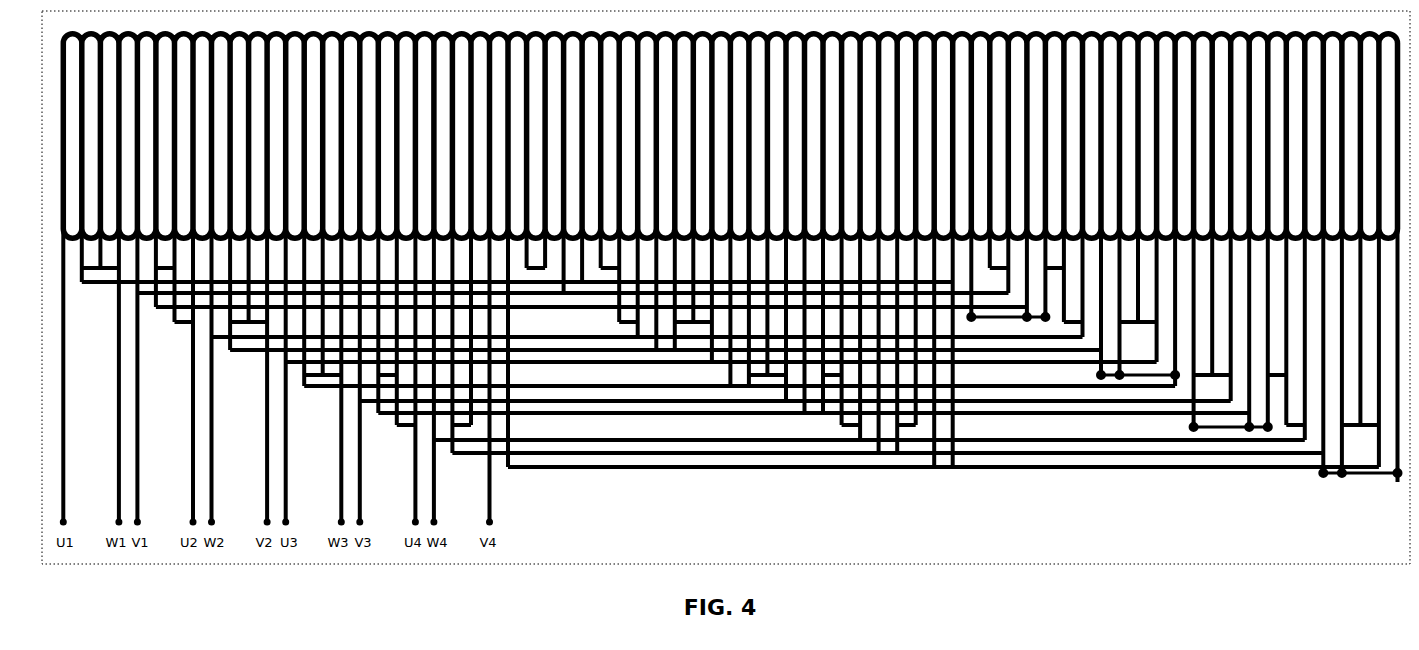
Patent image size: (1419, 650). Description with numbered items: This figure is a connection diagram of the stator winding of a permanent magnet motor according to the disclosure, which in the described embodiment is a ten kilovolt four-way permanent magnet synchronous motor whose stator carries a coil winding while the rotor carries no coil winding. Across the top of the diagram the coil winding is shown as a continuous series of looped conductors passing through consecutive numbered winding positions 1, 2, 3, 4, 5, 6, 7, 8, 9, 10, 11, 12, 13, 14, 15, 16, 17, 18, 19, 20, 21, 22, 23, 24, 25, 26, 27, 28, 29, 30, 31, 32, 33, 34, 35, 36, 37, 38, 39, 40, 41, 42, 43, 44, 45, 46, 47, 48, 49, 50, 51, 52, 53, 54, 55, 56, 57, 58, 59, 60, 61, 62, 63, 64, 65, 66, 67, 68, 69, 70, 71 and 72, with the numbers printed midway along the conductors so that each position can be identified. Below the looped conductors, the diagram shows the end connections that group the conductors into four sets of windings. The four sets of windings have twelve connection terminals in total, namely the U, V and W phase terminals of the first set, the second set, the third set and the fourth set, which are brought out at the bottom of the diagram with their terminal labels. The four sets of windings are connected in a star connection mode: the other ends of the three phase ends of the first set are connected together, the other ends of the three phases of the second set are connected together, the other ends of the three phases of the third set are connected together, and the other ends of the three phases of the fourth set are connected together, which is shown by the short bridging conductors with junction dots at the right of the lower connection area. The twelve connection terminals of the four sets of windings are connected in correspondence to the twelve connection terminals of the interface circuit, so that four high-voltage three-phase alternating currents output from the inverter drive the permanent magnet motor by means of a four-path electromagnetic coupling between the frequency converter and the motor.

The slot 1 is at (63, 282).
The slot 2 is at (82, 162).
The slot 3 is at (100, 155).
The slot 4 is at (119, 282).
The slot 5 is at (137, 282).
The slot 6 is at (156, 175).
The slot 7 is at (174, 182).
The slot 8 is at (193, 282).
The slot 9 is at (211, 282).
The slot 10 is at (230, 196).
The slot 11 is at (248, 182).
The slot 12 is at (267, 282).
The slot 13 is at (285, 282).
The slot 14 is at (304, 214).
The slot 15 is at (322, 209).
The slot 16 is at (341, 282).
The slot 17 is at (359, 282).
The slot 18 is at (378, 228).
The slot 19 is at (396, 234).
The slot 20 is at (415, 282).
The slot 21 is at (433, 282).
The slot 22 is at (452, 248).
The slot 23 is at (471, 234).
The slot 24 is at (489, 282).
The slot 25 is at (508, 255).
The slot 26 is at (526, 155).
The slot 27 is at (545, 155).
The slot 28 is at (563, 168).
The slot 29 is at (582, 162).
The slot 30 is at (600, 155).
The slot 31 is at (619, 182).
The slot 32 is at (637, 190).
The slot 33 is at (656, 196).
The slot 34 is at (674, 196).
The slot 35 is at (693, 182).
The slot 36 is at (711, 202).
The slot 37 is at (730, 214).
The slot 38 is at (748, 214).
The slot 39 is at (767, 209).
The slot 40 is at (786, 222).
The slot 41 is at (804, 228).
The slot 42 is at (823, 228).
The slot 43 is at (841, 234).
The slot 44 is at (860, 241).
The slot 45 is at (878, 248).
The slot 46 is at (897, 248).
The slot 47 is at (915, 234).
The slot 48 is at (934, 255).
The slot 49 is at (952, 255).
The slot 50 is at (971, 180).
The slot 51 is at (989, 155).
The slot 52 is at (1008, 168).
The slot 53 is at (1026, 180).
The slot 54 is at (1045, 180).
The slot 55 is at (1063, 182).
The slot 56 is at (1082, 190).
The slot 57 is at (1101, 209).
The slot 58 is at (1119, 209).
The slot 59 is at (1138, 182).
The slot 60 is at (1156, 202).
The slot 61 is at (1175, 214).
The slot 62 is at (1193, 235).
The slot 63 is at (1212, 209).
The slot 64 is at (1230, 222).
The slot 65 is at (1249, 235).
The slot 66 is at (1267, 235).
The slot 67 is at (1286, 234).
The slot 68 is at (1304, 241).
The slot 69 is at (1323, 258).
The slot 70 is at (1341, 258).
The slot 71 is at (1360, 234).
The slot 72 is at (1378, 255).